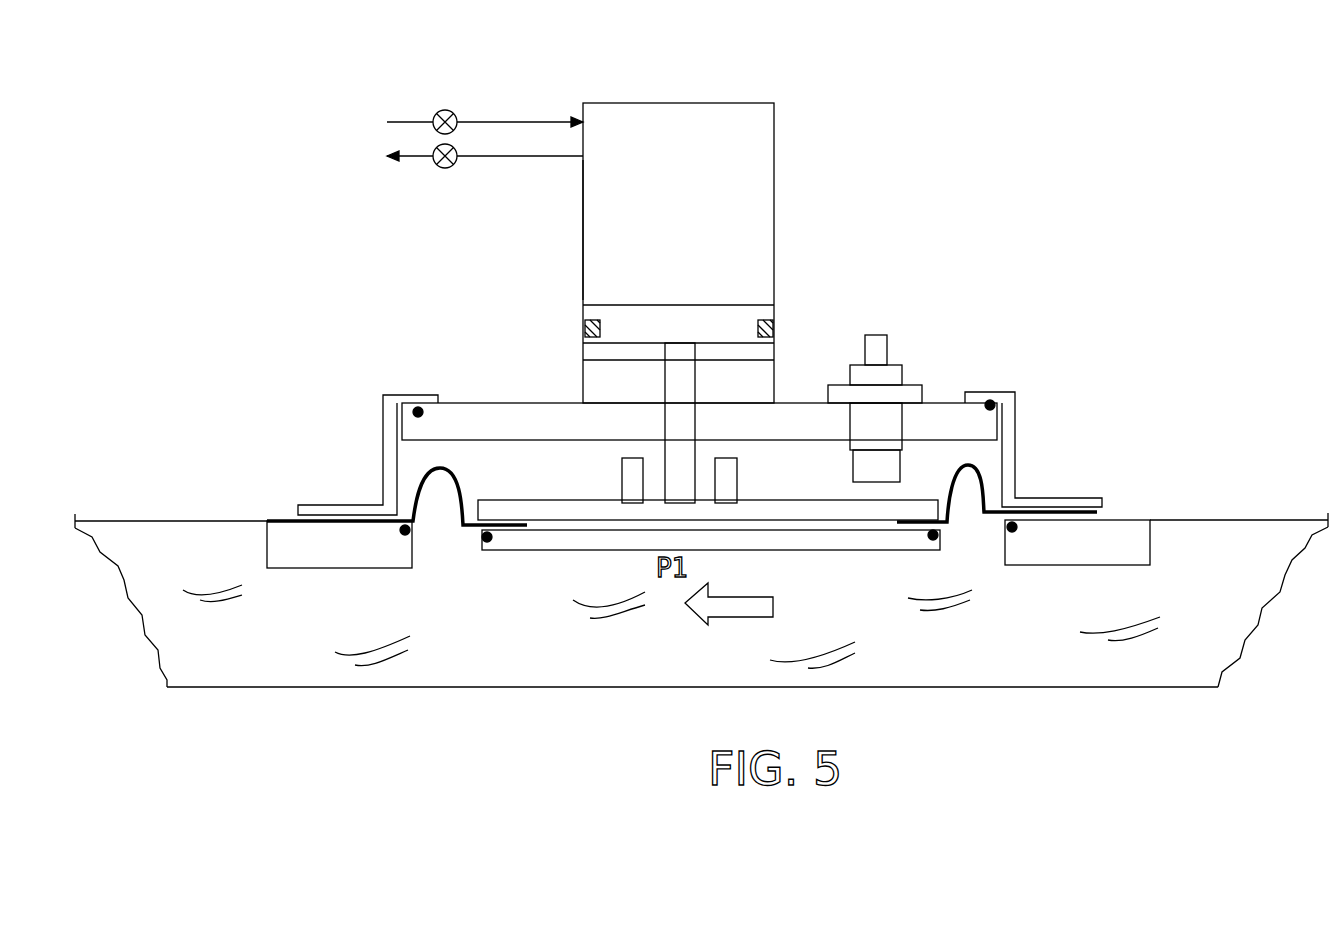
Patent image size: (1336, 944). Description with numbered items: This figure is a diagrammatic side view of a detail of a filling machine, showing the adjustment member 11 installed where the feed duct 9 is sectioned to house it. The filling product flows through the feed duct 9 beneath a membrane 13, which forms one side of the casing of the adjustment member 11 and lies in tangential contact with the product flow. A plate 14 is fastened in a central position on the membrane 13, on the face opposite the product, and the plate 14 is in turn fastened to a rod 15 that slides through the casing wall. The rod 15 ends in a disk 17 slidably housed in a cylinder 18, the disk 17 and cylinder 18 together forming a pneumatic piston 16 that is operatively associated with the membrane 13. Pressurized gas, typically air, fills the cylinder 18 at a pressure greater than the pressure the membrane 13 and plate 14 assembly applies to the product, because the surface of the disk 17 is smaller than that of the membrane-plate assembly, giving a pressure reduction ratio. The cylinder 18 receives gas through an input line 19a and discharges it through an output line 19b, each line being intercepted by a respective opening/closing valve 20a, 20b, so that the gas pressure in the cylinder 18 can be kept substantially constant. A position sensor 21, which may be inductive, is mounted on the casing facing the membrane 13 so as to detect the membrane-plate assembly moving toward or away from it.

The feed duct 9 is at (570, 685).
The adjustment member 11 is at (876, 174).
The membrane 13 is at (423, 505).
The plate 14 is at (575, 540).
The rod 15 is at (688, 445).
The pneumatic piston 16 is at (779, 163).
The disk 17 is at (733, 310).
The cylinder 18 is at (582, 221).
The input line 19a is at (513, 121).
The output line 19b is at (415, 163).
The opening/closing valve 20a is at (447, 110).
The opening/closing valve 20b is at (445, 169).
The position sensor 21 is at (903, 367).